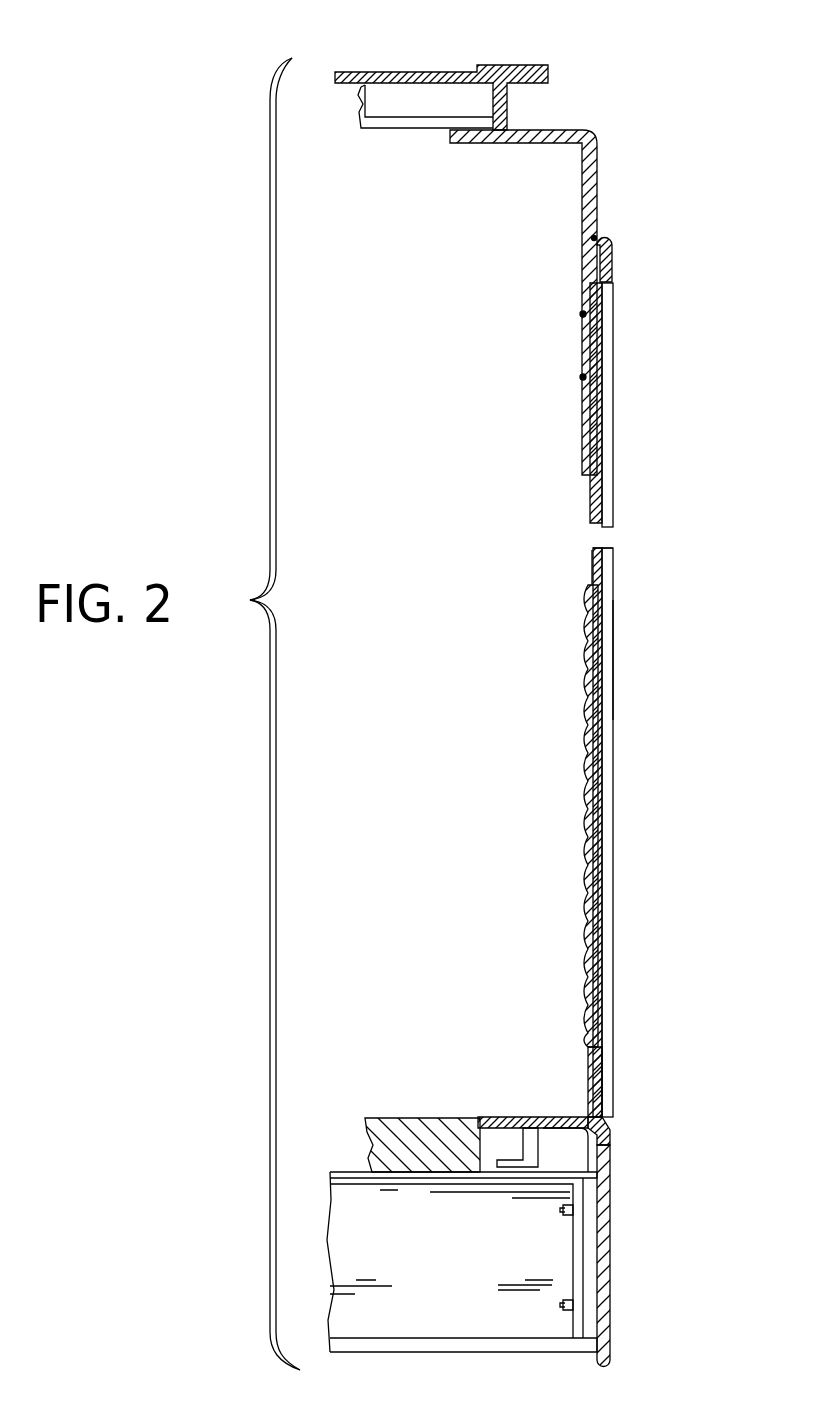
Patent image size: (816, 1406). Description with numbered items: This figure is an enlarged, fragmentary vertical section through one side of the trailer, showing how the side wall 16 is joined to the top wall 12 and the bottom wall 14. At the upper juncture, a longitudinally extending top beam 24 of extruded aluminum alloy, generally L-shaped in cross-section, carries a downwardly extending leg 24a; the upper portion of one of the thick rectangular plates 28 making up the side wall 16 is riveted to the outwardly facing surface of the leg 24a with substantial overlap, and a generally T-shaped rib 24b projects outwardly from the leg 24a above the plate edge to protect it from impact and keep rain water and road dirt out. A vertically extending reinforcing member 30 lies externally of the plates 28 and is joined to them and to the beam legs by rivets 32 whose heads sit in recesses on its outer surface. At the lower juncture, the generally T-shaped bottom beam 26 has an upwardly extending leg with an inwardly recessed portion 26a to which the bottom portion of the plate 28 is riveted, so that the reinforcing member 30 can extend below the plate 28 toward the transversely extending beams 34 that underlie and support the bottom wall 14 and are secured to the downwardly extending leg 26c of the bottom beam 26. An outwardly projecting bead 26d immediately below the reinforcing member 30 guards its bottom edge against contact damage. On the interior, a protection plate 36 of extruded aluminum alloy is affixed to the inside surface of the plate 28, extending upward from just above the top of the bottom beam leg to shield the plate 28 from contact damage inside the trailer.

The top wall 12 is at (392, 72).
The bottom wall 14 is at (420, 1116).
The side wall 16 is at (600, 430).
The top beam 24 is at (597, 185).
The downwardly extending leg 24a is at (588, 355).
The T-shaped rib 24b is at (612, 258).
The bottom beam 26 is at (588, 1062).
The inwardly recessed portion 26a is at (596, 935).
The downwardly extending leg 26c is at (612, 1235).
The bead 26d is at (612, 1133).
The rectangular plate 28 is at (592, 578).
The reinforcing member 30 is at (613, 655).
The rivet 32 is at (582, 314).
The transversely extending beam 34 is at (456, 1249).
The protection plate 36 is at (584, 725).